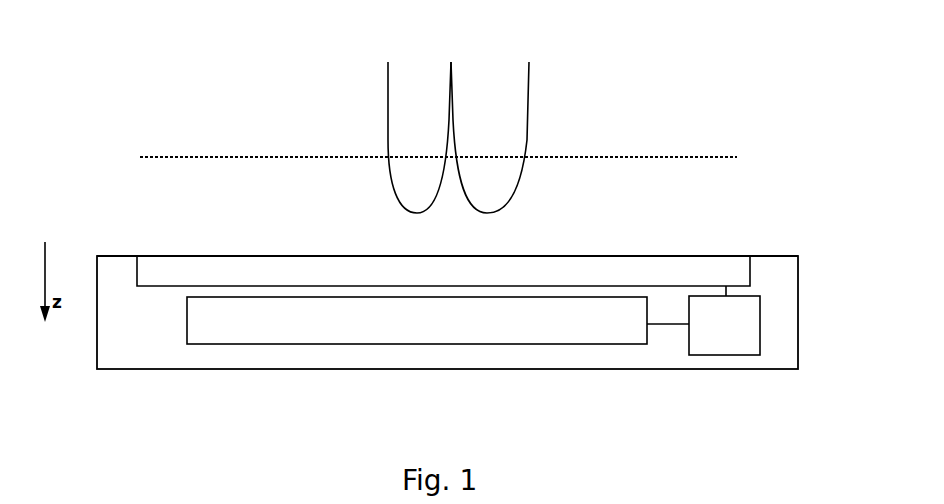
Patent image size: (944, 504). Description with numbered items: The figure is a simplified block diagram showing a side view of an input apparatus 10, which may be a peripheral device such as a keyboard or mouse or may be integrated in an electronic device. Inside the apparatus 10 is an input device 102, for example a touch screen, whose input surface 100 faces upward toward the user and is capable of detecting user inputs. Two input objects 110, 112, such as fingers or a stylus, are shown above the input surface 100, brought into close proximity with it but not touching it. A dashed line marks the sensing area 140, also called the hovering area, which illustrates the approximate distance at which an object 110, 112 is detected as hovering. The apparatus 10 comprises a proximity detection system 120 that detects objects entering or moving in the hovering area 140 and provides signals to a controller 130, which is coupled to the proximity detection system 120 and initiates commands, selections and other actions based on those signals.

The apparatus 10 is at (790, 327).
The input surface 100 is at (726, 257).
The input device 102 is at (177, 265).
The input object 110 is at (412, 112).
The input object 112 is at (513, 104).
The proximity detection system 120 is at (488, 332).
The controller 130 is at (701, 348).
The sensing area 140 is at (722, 180).